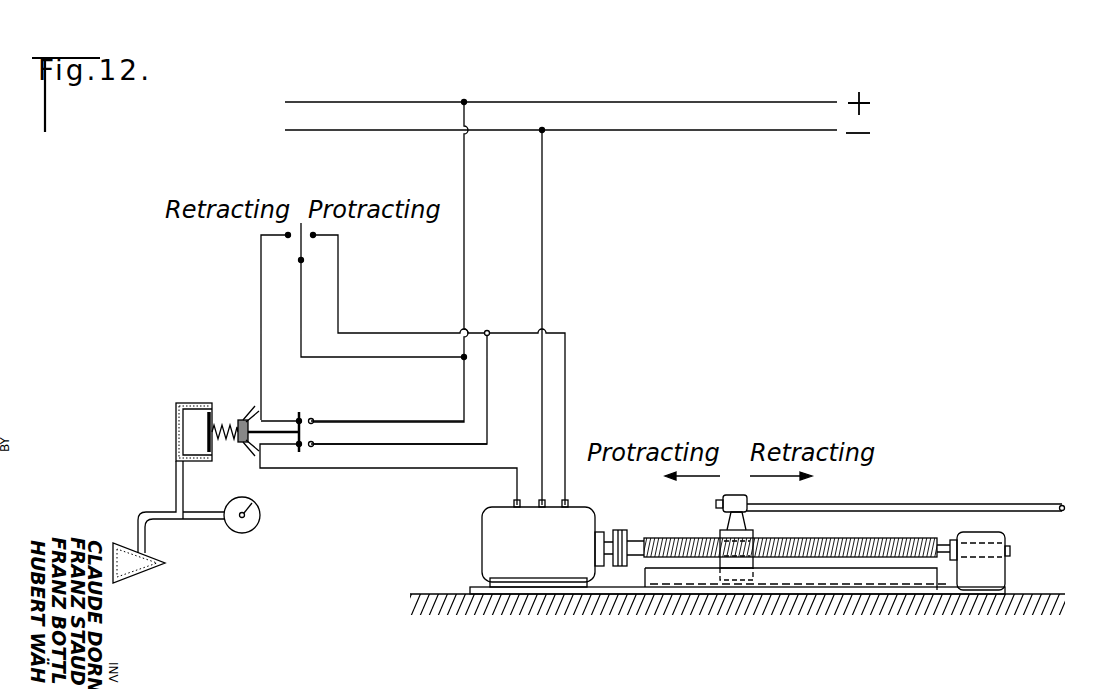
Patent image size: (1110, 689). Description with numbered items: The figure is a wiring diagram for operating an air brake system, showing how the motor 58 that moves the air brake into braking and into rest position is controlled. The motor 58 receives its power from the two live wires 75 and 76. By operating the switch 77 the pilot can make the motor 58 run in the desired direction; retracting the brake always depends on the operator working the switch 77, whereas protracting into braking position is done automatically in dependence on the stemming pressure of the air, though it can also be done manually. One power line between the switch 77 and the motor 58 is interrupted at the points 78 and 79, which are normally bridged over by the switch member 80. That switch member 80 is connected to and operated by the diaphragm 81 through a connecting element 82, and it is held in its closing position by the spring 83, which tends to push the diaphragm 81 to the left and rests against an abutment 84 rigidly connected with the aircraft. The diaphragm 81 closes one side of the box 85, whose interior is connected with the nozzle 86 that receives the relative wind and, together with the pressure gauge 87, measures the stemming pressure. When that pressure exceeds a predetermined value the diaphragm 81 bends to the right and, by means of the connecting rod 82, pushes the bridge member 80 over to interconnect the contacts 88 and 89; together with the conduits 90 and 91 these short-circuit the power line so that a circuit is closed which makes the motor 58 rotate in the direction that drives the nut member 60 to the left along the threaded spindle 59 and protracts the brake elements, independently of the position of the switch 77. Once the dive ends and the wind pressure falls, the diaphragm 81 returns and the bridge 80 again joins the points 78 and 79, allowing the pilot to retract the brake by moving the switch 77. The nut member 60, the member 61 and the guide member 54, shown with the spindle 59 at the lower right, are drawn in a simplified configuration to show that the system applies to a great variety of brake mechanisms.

The guide member 54 is at (673, 578).
The motor 58 is at (545, 565).
The threaded spindle 59 is at (841, 560).
The nut member 60 is at (745, 563).
The member 61 is at (1060, 514).
The live wire 75 is at (465, 100).
The live wire 76 is at (557, 132).
The switch 77 is at (300, 244).
The point 78 is at (296, 412).
The point 79 is at (295, 447).
The switch member 80 is at (300, 452).
The diaphragm 81 is at (207, 445).
The connecting element 82 is at (262, 430).
The spring 83 is at (215, 425).
The abutment 84 is at (245, 445).
The box 85 is at (176, 421).
The nozzle 86 is at (140, 570).
The pressure gauge 87 is at (235, 533).
The contact 88 is at (313, 418).
The contact 89 is at (313, 447).
The conduit 90 is at (392, 421).
The conduit 91 is at (403, 446).